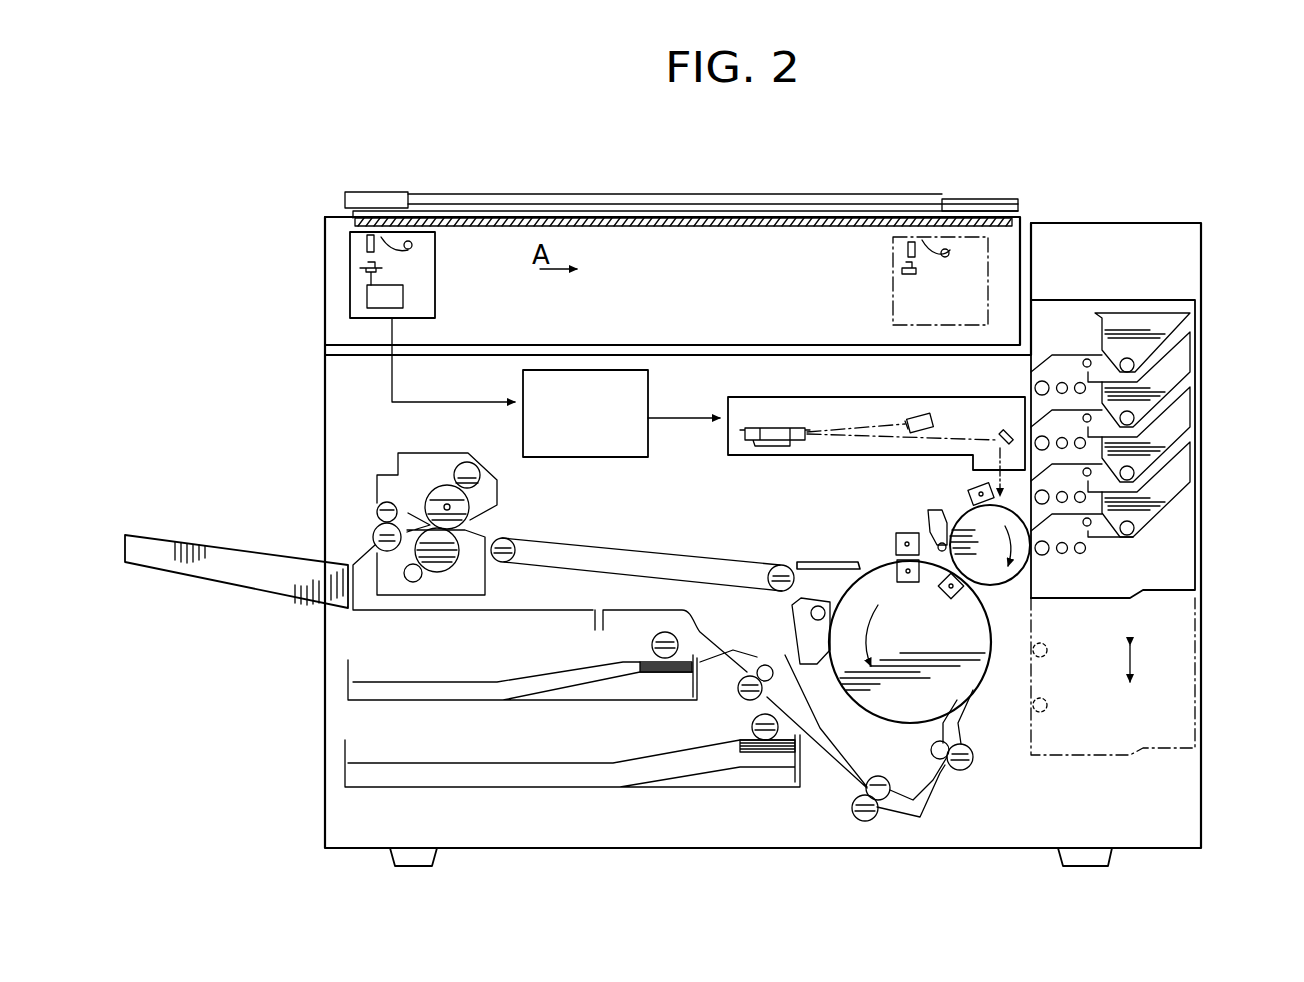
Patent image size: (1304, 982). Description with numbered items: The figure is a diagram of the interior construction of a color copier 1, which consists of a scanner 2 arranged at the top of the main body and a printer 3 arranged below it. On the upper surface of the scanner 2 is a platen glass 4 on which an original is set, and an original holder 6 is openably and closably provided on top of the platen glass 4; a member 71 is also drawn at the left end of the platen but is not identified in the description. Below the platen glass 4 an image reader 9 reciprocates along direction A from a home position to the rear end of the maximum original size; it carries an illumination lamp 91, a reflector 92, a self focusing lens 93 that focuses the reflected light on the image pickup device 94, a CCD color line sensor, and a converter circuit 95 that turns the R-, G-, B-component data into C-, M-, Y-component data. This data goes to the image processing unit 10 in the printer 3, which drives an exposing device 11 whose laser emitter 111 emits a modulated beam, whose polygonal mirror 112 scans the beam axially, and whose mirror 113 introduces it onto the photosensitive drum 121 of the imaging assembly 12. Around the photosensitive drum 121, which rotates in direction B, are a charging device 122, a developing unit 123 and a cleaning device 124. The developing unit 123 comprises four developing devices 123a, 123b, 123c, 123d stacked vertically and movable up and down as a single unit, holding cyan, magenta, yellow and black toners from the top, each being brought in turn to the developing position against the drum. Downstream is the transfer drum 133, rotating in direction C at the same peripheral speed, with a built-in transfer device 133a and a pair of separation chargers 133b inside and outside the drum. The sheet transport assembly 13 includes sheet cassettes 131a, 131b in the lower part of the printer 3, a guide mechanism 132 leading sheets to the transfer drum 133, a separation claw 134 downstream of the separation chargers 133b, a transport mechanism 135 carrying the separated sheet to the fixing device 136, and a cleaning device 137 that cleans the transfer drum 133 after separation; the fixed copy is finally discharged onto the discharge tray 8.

The color copier 1 is at (360, 174).
The scanner 2 is at (1025, 216).
The printer 3 is at (1160, 222).
The platen glass 4 is at (716, 212).
The original holder 6 is at (963, 199).
The document cover portion 71 is at (494, 193).
The image reader 9 is at (436, 308).
The illumination lamp 91 is at (420, 258).
The reflector 92 is at (413, 244).
The self focusing lens 93 is at (366, 244).
The image pickup device 94 is at (360, 270).
The converter circuit 95 is at (370, 298).
The image processing unit 10 is at (648, 402).
The exposing device 11 is at (782, 397).
The laser emitter 111 is at (918, 416).
The polygonal mirror 112 is at (760, 428).
The mirror 113 is at (1003, 430).
The imaging assembly 12 is at (890, 506).
The photosensitive drum 121 is at (1000, 590).
The charging device 122 is at (970, 486).
The developing unit 123 is at (1077, 300).
The developing device 123a is at (1165, 324).
The developing device 123b is at (1178, 383).
The developing device 123c is at (1180, 438).
The developing device 123d is at (1180, 491).
The cleaning device 124 is at (928, 514).
The sheet transport assembly 13 is at (752, 548).
The sheet cassette 131a is at (560, 700).
The sheet cassette 131b is at (560, 787).
The guide mechanism 132 is at (930, 806).
The transfer drum 133 is at (972, 690).
The transfer device 133a is at (950, 598).
The separation chargers 133b is at (896, 545).
The separation claw 134 is at (812, 562).
The transport mechanism 135 is at (636, 540).
The fixing device 136 is at (483, 520).
The cleaning device 137 is at (793, 628).
The discharge tray 8 is at (268, 553).